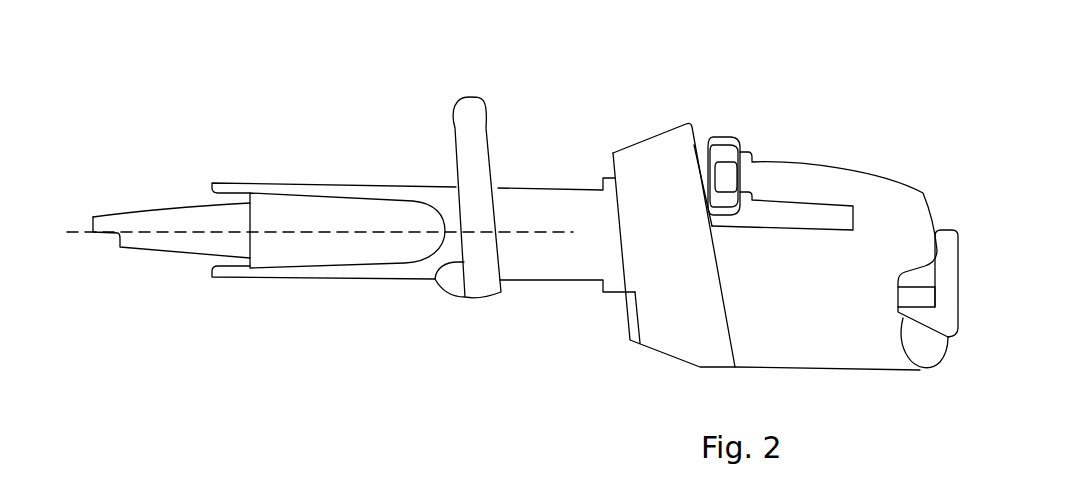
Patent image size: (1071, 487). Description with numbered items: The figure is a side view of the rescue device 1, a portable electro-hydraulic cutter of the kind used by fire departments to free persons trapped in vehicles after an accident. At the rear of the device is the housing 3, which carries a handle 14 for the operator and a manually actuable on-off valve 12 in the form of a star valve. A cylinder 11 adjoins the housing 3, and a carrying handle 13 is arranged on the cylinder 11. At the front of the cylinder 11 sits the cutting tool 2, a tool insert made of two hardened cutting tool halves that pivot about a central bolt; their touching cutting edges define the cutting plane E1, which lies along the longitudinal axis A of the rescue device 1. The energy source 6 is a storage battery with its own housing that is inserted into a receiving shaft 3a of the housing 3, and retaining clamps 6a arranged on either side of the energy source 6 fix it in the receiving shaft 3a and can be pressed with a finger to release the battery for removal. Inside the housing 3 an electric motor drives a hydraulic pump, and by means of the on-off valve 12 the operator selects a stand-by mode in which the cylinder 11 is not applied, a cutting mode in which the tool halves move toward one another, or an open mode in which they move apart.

The rescue device 1 is at (332, 129).
The cutting tool 2 is at (157, 220).
The housing 3 is at (650, 150).
The receiving shaft 3a is at (920, 370).
The energy source 6 is at (948, 233).
The retaining clamps 6a is at (922, 300).
The cylinder 11 is at (542, 192).
The on-off valve 12 is at (733, 140).
The carrying handle 13 is at (468, 103).
The handle 14 is at (805, 172).
The longitudinal axis A is at (528, 232).
The cutting plane E1 is at (77, 235).